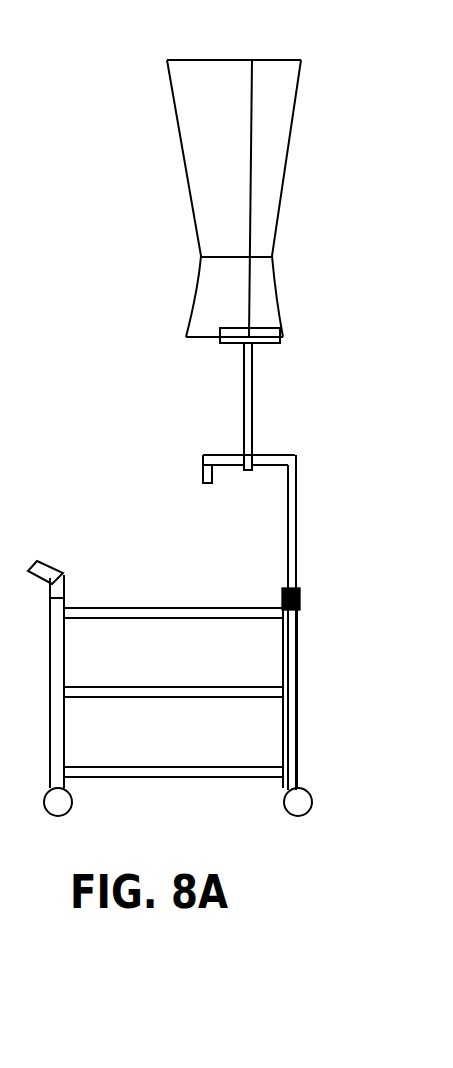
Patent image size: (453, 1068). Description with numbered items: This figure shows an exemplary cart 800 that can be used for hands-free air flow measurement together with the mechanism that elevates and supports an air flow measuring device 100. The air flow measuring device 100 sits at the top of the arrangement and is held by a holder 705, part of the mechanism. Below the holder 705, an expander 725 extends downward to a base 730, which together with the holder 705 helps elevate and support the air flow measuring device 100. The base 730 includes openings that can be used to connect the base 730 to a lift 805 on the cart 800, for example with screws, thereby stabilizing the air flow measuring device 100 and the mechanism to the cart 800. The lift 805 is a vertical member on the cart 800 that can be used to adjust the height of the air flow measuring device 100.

The air flow measuring device 100 is at (249, 51).
The holder 705 is at (250, 343).
The expander 725 is at (266, 398).
The base 730 is at (266, 450).
The lift 805 is at (295, 522).
The cart 800 is at (140, 565).